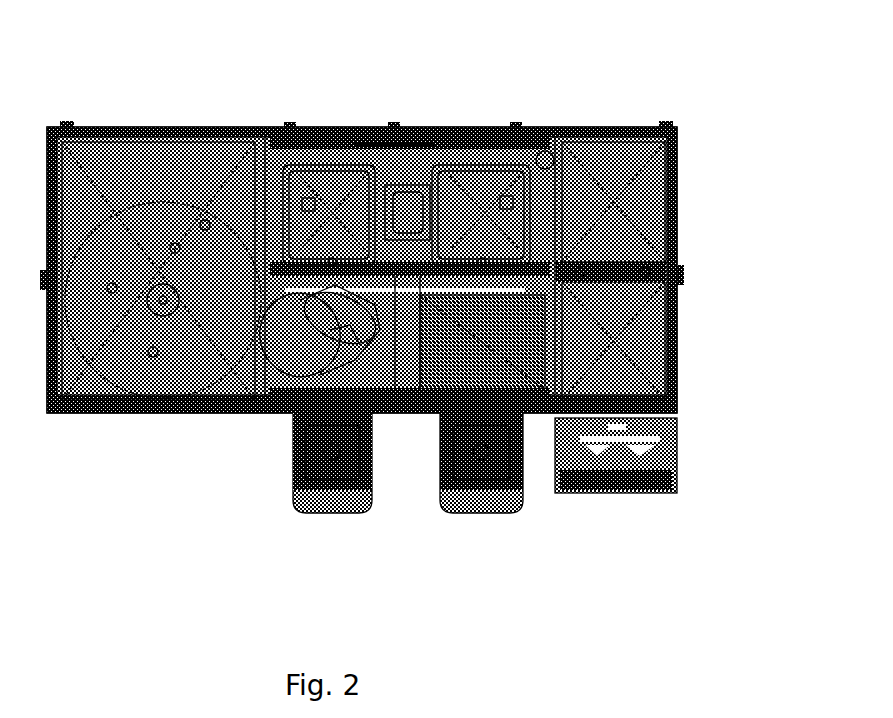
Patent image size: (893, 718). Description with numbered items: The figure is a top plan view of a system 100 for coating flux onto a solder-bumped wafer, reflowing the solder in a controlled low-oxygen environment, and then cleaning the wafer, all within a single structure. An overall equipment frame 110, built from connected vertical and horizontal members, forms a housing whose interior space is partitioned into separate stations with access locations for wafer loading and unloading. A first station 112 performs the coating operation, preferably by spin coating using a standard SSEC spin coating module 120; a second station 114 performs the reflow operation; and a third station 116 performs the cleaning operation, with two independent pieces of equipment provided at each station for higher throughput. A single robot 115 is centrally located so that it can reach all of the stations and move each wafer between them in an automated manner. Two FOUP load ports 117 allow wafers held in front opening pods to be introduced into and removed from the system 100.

The system 100 is at (735, 85).
The equipment frame 110 is at (677, 221).
The first station 112 is at (330, 178).
The second station 114 is at (140, 242).
The robot 115 is at (292, 347).
The third station 116 is at (492, 182).
The FOUP load ports 117 is at (440, 465).
The spin coating module 120 is at (350, 230).